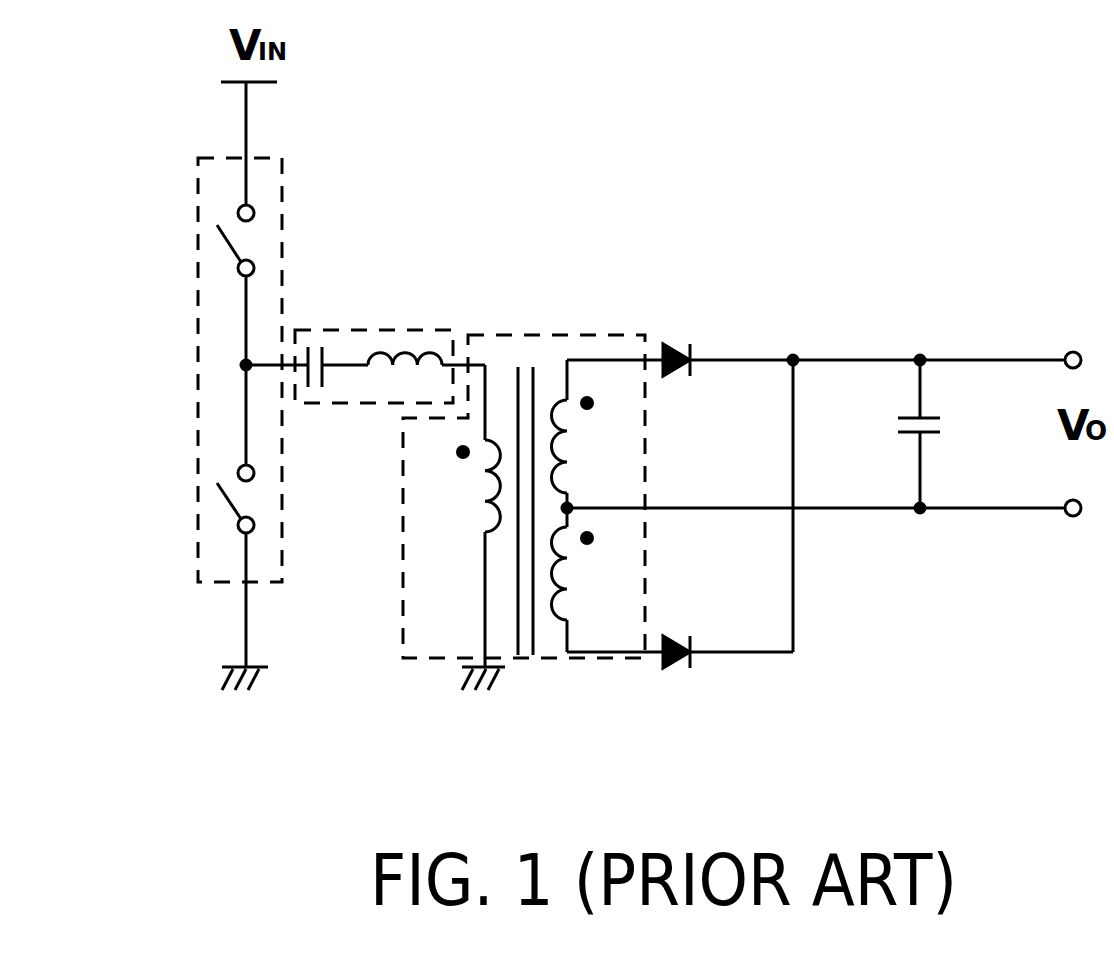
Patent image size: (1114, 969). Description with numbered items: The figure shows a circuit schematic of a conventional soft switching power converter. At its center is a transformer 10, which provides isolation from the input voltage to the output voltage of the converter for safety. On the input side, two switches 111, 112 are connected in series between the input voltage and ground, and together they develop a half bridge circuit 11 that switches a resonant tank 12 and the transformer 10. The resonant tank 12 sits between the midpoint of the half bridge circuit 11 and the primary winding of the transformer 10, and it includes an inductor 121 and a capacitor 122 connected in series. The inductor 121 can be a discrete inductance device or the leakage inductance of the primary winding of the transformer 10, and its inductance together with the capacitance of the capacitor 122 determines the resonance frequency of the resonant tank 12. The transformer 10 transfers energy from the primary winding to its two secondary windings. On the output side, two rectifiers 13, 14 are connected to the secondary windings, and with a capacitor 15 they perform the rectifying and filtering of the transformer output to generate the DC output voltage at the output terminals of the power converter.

The transformer 10 is at (550, 335).
The half bridge circuit 11 is at (248, 384).
The switch 111 is at (260, 243).
The switch 112 is at (265, 520).
The resonant tank 12 is at (384, 370).
The inductor 121 is at (403, 350).
The capacitor 122 is at (313, 342).
The rectifier 13 is at (678, 343).
The rectifier 14 is at (678, 635).
The capacitor 15 is at (947, 420).